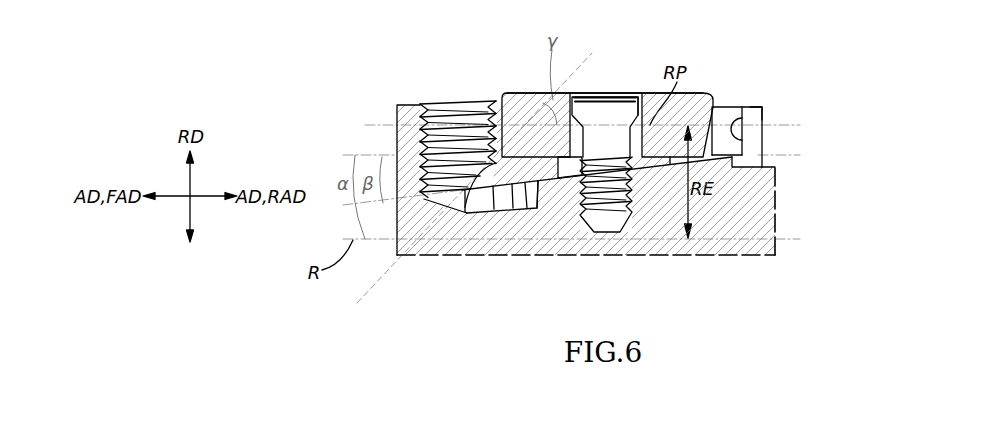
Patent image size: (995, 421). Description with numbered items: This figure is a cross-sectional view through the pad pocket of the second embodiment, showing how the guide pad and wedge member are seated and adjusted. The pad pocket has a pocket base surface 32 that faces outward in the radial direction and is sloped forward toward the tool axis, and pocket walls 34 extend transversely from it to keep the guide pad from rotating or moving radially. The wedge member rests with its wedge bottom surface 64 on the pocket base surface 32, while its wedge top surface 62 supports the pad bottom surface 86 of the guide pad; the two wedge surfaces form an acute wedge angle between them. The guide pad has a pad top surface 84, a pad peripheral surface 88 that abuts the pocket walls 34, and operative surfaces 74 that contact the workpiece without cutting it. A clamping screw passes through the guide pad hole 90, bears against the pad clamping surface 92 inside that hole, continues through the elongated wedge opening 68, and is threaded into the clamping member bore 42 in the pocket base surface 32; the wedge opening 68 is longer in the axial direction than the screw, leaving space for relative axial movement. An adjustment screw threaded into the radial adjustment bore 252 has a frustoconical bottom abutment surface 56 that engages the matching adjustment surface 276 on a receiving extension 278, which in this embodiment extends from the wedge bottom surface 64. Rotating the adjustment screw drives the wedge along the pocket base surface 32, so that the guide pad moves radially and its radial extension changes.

The pocket base surface 32 is at (762, 93).
The pocket walls 34 is at (762, 107).
The clamping member bore 42 is at (563, 162).
The bottom abutment surface 56 is at (499, 257).
The wedge top surface 62 is at (713, 107).
The wedge bottom surface 64 is at (537, 210).
The wedge opening 68 is at (570, 165).
The operative surfaces 74 is at (517, 94).
The pad top surface 84 is at (617, 82).
The pad bottom surface 86 is at (660, 158).
The pad peripheral surface 88 is at (563, 82).
The guide pad hole 90 is at (576, 97).
The pad clamping surface 92 is at (631, 107).
The adjustment bore 252 is at (457, 210).
The adjustment surface 276 is at (407, 181).
The receiving extension 278 is at (495, 152).